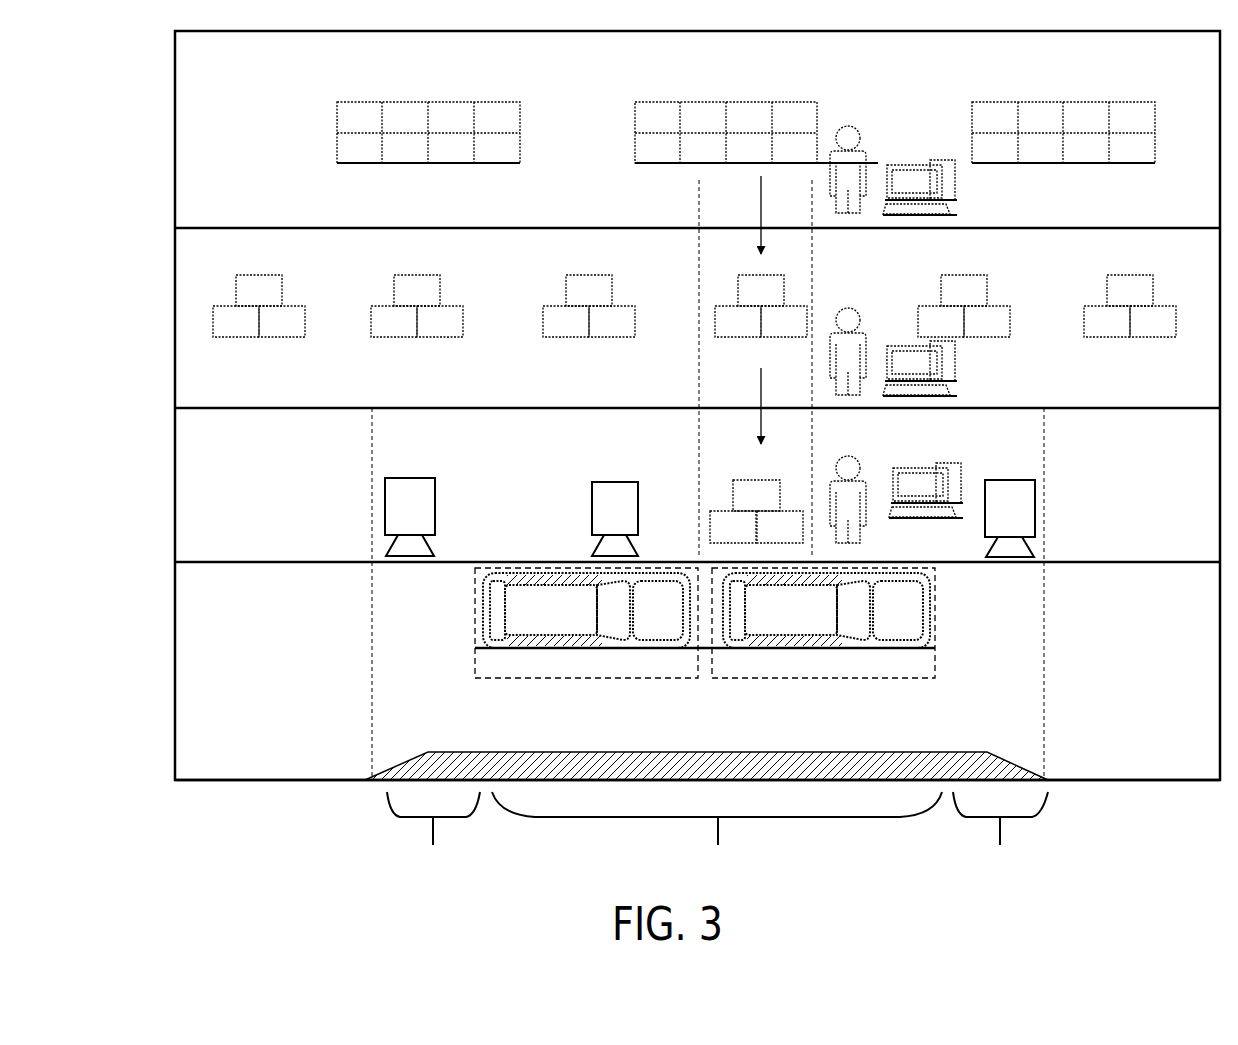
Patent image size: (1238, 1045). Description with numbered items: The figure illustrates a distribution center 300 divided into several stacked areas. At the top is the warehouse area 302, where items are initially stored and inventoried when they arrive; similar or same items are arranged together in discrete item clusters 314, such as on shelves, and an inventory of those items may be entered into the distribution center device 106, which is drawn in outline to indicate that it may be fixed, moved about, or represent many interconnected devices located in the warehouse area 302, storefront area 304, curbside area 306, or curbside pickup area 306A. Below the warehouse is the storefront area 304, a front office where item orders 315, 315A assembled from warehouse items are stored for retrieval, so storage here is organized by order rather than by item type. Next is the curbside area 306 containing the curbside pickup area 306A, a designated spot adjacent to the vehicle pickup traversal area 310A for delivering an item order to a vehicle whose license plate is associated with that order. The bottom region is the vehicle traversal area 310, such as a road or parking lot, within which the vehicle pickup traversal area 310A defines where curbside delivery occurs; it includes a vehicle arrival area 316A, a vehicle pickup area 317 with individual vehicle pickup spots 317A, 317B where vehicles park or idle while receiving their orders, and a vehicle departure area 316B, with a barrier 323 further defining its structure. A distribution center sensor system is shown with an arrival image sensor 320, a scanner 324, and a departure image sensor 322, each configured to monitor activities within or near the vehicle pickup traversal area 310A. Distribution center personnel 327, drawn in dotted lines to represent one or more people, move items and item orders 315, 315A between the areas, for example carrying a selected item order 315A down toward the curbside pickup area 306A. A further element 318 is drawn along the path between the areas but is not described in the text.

The distribution center 300 is at (120, 123).
The warehouse area 302 is at (251, 211).
The storefront area 304 is at (263, 393).
The curbside area 306 is at (263, 553).
The curbside pickup area 306A is at (449, 443).
The vehicle traversal area 310 is at (241, 753).
The vehicle pickup traversal area 310A is at (442, 733).
The item clusters 314 is at (440, 76).
The item orders 315 is at (272, 259).
The item order 315A is at (726, 359).
The vehicle arrival area 316A is at (575, 621).
The vehicle departure area 316B is at (814, 621).
The vehicle pickup area 317 is at (717, 836).
The vehicle pickup spot 317A is at (629, 675).
The vehicle pickup spot 317B is at (849, 675).
The movement path 318 is at (720, 213).
The arrival image sensor 320 is at (385, 505).
The departure image sensor 322 is at (1037, 490).
The barrier 323 is at (1000, 767).
The scanner 324 is at (600, 493).
The distribution center personnel 327 is at (862, 162).
The distribution center device 106 is at (918, 165).